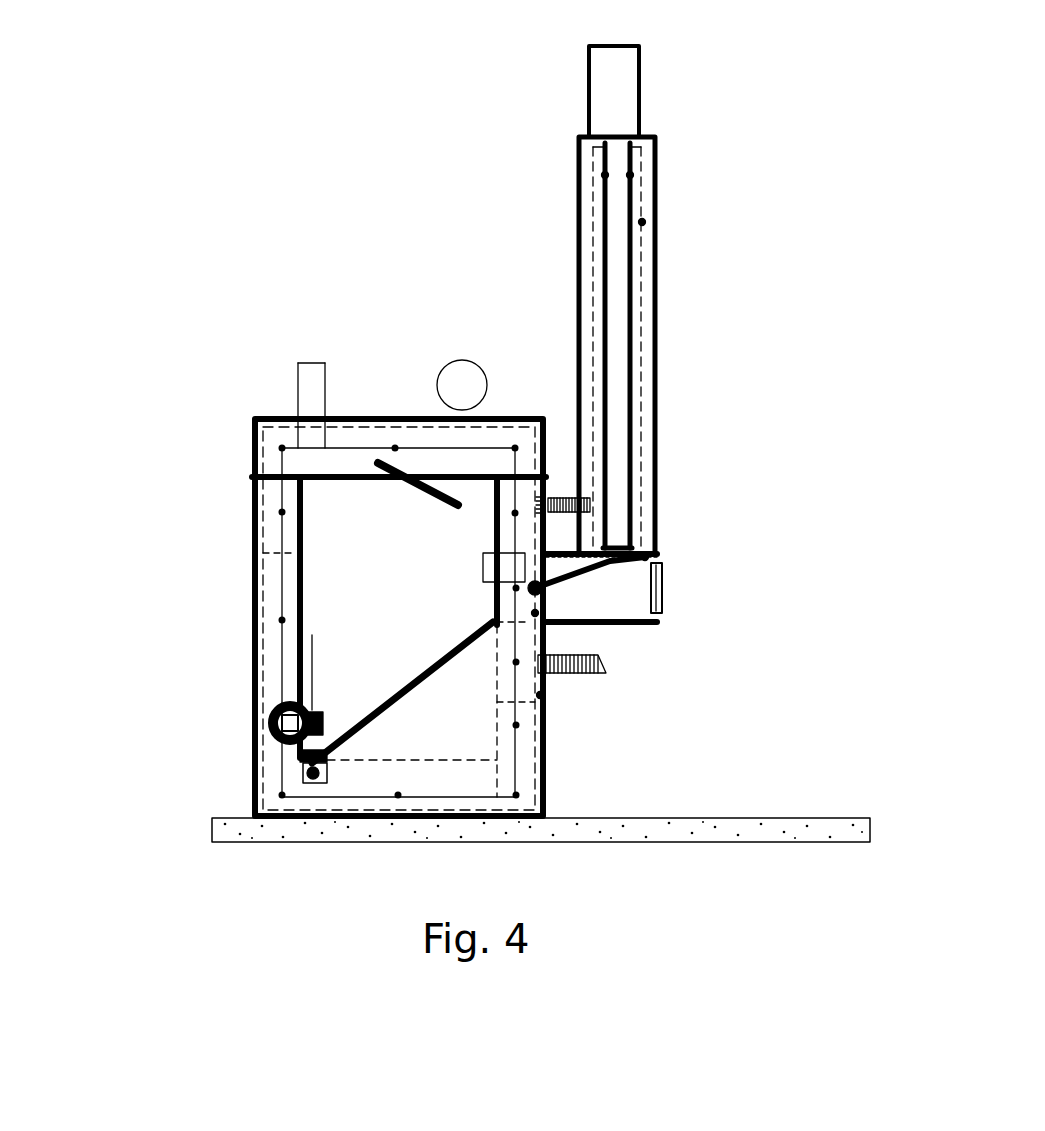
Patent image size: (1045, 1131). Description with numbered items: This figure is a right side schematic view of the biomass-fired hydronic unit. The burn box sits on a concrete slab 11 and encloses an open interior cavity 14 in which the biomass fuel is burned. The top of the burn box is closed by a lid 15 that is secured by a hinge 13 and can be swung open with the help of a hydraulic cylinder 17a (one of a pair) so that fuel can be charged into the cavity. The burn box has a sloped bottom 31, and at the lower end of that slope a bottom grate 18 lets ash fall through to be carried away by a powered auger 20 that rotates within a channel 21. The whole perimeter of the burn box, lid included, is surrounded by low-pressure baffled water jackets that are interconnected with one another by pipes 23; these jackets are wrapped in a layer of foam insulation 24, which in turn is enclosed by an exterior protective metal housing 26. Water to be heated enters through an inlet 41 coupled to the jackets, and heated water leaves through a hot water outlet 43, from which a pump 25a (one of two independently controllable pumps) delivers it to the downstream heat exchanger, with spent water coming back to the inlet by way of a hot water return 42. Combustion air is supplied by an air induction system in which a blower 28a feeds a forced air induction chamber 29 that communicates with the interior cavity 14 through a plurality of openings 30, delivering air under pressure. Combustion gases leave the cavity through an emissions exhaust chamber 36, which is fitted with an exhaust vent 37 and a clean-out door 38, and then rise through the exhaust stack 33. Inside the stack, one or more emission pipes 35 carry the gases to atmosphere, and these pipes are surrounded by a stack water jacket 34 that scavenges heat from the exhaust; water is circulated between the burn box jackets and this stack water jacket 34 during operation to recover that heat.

The concrete slab 11 is at (212, 830).
The hinge 13 is at (403, 590).
The interior cavity 14 is at (380, 588).
The lid 15 is at (365, 355).
The hydraulic cylinder 17a is at (297, 493).
The bottom grate 18 is at (223, 741).
The powered auger 20 is at (204, 754).
The channel 21 is at (307, 775).
The pipes 23 is at (395, 448).
The foam insulation 24 is at (542, 693).
The pump 25a is at (465, 360).
The exterior protective metal housing 26 is at (547, 738).
The blower 28a is at (351, 664).
The forced air induction chamber 29 is at (221, 697).
The openings 30 is at (221, 648).
The sloped bottom 31 is at (407, 688).
The exhaust stack 33 is at (590, 90).
The stack water jacket 34 is at (644, 222).
The emission pipes 35 is at (600, 175).
The emissions exhaust chamber 36 is at (660, 615).
The exhaust vent 37 is at (483, 568).
The clean-out door 38 is at (665, 587).
The inlet 41 is at (648, 556).
The hot water return 42 is at (529, 331).
The hot water outlet 43 is at (606, 663).